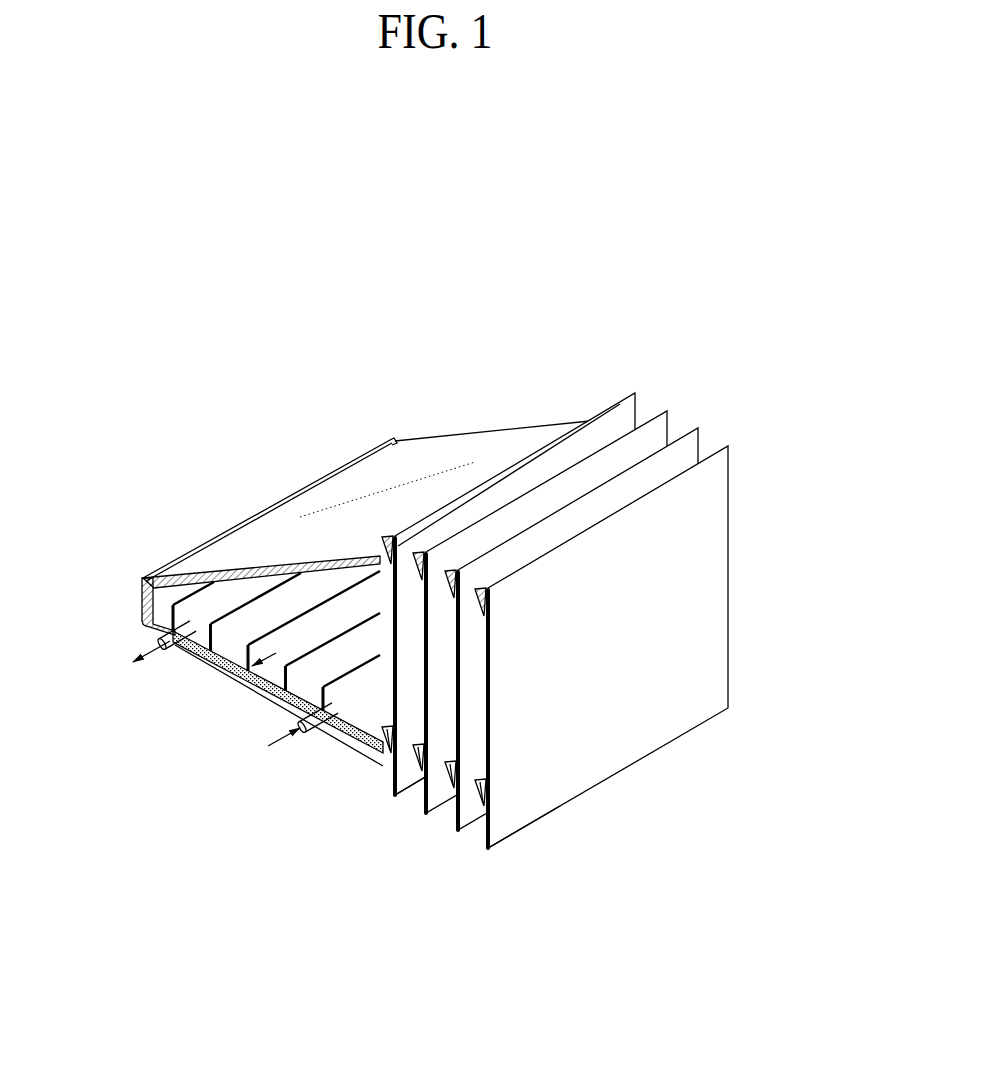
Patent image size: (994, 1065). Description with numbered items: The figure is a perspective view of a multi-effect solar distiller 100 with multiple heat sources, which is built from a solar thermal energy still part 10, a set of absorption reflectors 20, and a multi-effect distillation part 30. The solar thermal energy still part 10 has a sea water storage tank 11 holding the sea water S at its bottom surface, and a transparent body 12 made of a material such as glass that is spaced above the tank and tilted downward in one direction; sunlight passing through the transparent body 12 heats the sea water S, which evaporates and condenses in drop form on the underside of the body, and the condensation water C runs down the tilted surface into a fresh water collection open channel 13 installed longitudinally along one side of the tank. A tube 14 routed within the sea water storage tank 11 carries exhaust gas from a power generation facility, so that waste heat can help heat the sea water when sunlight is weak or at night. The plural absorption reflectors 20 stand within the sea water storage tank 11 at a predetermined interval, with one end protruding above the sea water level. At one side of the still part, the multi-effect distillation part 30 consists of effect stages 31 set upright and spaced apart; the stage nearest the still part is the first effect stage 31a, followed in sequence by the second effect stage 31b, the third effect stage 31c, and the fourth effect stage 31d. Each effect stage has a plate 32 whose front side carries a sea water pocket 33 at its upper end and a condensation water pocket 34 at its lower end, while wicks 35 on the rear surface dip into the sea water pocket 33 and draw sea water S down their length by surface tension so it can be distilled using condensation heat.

The multi-effect solar distiller 100 is at (433, 414).
The solar thermal energy still part 10 is at (221, 536).
The sea water storage tank 11 is at (212, 672).
The transparent body 12 is at (195, 576).
The fresh water collection open channel 13 is at (162, 650).
The tube 14 is at (322, 720).
The absorption reflectors 20 is at (246, 682).
The multi-effect distillation part 30 is at (745, 506).
The effect stages 31 is at (591, 419).
The first effect stage 31a is at (634, 394).
The second effect stage 31b is at (666, 412).
The third effect stage 31c is at (697, 429).
The fourth effect stage 31d is at (729, 447).
The plate 32 is at (480, 820).
The sea water pocket 33 is at (382, 558).
The condensation water pocket 34 is at (399, 795).
The wicks 35 is at (517, 823).
The sea water S is at (370, 561).
The condensation water C is at (383, 741).